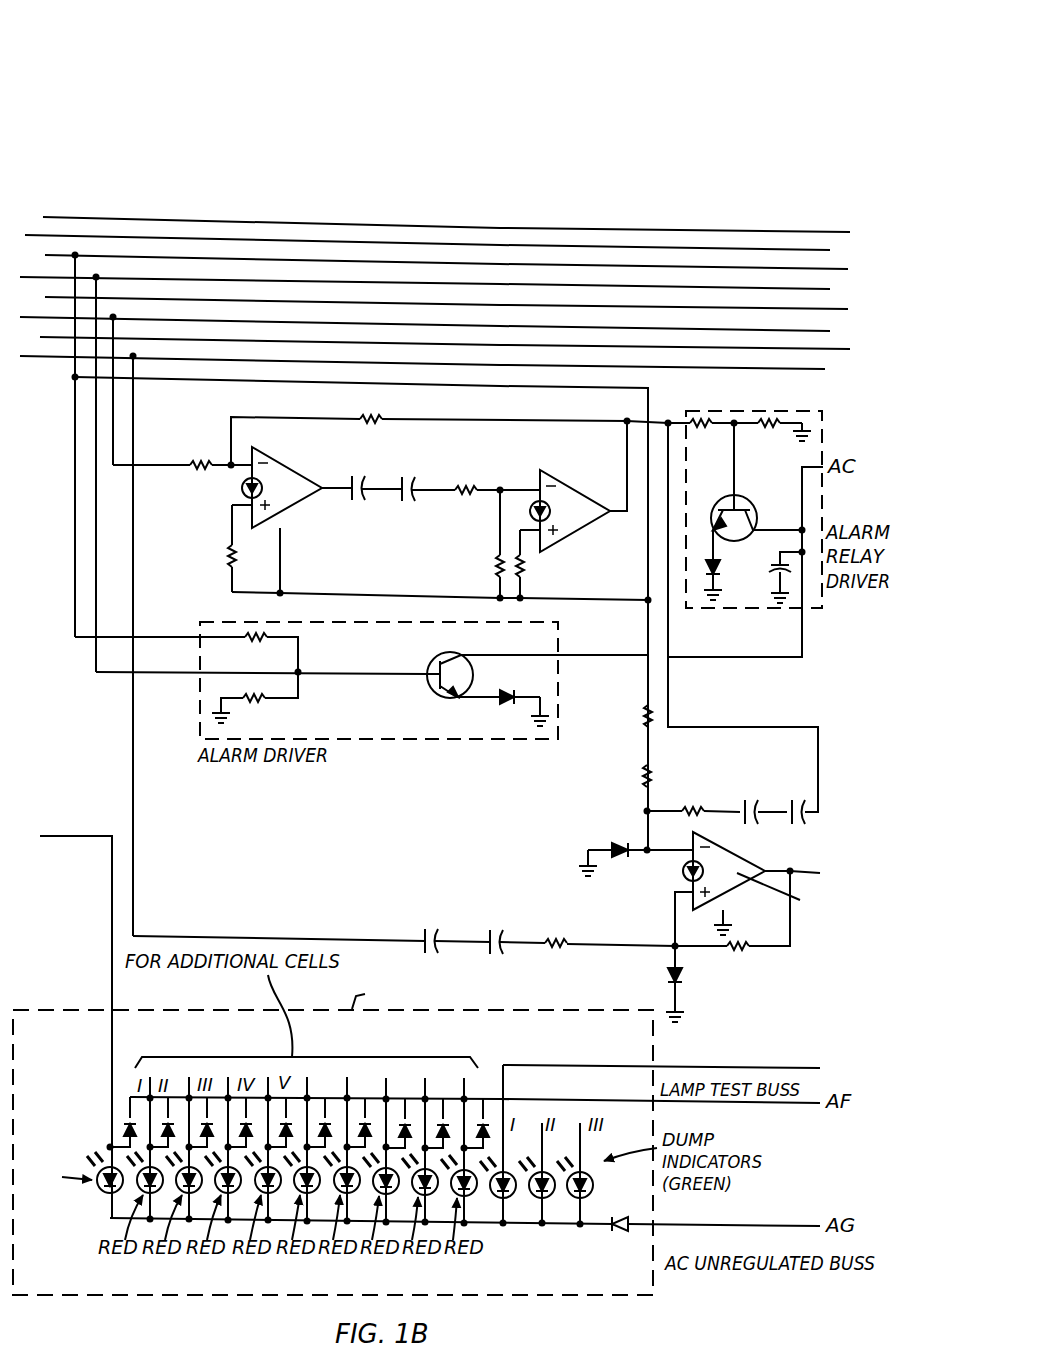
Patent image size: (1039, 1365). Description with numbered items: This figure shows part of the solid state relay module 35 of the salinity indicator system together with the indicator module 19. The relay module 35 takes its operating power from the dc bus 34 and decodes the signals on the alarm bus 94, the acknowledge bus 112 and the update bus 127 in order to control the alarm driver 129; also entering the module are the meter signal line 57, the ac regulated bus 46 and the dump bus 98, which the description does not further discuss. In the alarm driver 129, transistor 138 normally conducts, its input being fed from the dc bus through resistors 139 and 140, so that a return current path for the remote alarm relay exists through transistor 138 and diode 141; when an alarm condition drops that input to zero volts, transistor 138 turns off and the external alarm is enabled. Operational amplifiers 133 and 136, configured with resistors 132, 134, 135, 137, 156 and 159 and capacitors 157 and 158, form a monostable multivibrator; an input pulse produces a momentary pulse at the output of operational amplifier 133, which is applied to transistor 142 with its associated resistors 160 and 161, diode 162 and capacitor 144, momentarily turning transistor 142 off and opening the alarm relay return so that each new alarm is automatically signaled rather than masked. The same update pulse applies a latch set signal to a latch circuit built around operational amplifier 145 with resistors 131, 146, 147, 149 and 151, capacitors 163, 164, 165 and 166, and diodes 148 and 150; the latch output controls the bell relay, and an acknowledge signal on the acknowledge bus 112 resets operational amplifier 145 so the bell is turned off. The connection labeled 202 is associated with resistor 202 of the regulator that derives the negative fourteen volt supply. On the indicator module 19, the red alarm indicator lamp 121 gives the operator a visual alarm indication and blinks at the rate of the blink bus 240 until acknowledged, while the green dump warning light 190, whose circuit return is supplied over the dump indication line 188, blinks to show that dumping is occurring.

The solid state relay module 35 is at (444, 473).
The meter signal line 57 is at (530, 216).
The AC regulated buss 46 is at (553, 236).
The dc bus 34 is at (572, 256).
The alarm bus 94 is at (812, 288).
The dump buss I 98 is at (678, 307).
The update bus 127 is at (513, 325).
The blink bus 240 is at (178, 338).
The acknowledge bus 112 is at (218, 357).
The resistor 159 is at (366, 416).
The operational amplifier 136 is at (307, 470).
The capacitor 157 is at (364, 480).
The capacitor 158 is at (418, 480).
The resistor 135 is at (467, 482).
The operational amplifier 133 is at (585, 490).
The resistor 156 is at (200, 474).
The resistor 137 is at (226, 557).
The resistor 134 is at (494, 567).
The resistor 132 is at (527, 567).
The resistor 160 is at (703, 434).
The resistor 161 is at (766, 434).
The transistor 142 is at (761, 500).
The diode 162 is at (730, 570).
The capacitor 144 is at (762, 576).
The resistor 139 is at (256, 641).
The resistor 140 is at (260, 702).
The transistor 138 is at (428, 667).
The diode 141 is at (489, 702).
The alarm driver 129 is at (565, 677).
The resistor 131 is at (640, 714).
The resistor 146 is at (640, 777).
The resistor 147 is at (689, 806).
The capacitor 164 is at (748, 806).
The capacitor 163 is at (796, 806).
The diode 148 is at (615, 840).
The operational amplifier 145 is at (756, 870).
The resistor 149 is at (736, 943).
The diode 150 is at (686, 976).
The capacitor 165 is at (427, 926).
The capacitor 166 is at (494, 927).
The resistor 151 is at (555, 932).
The resistor 202 is at (72, 832).
The indicator module 19 is at (584, 1008).
The dump indication line 188 is at (800, 1064).
The red alarm indicator lamp 121 is at (99, 1193).
The green dump warning light 190 is at (504, 1201).